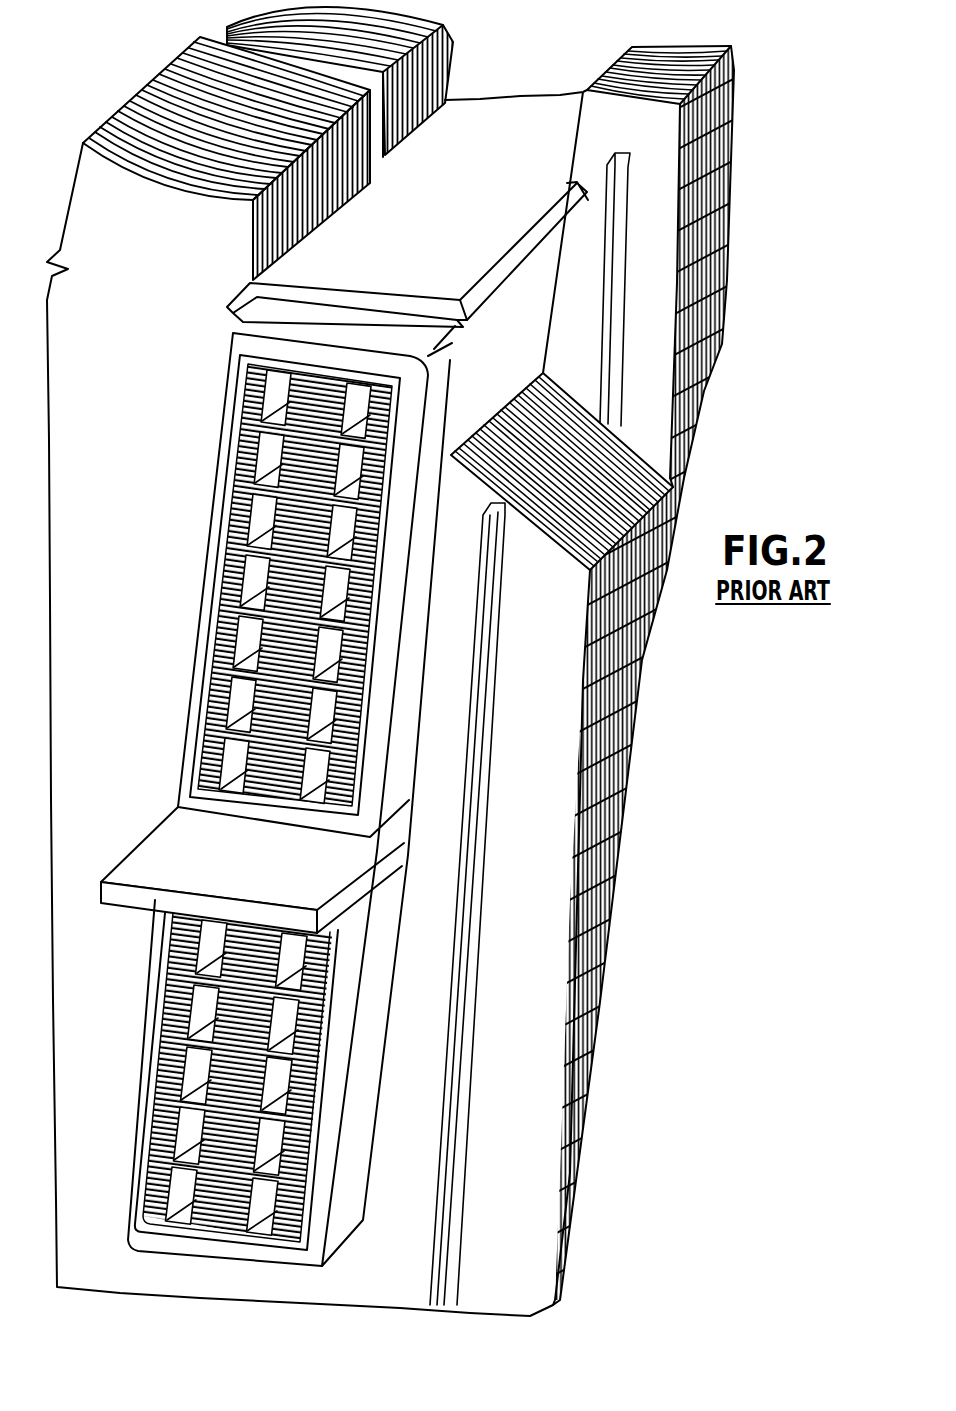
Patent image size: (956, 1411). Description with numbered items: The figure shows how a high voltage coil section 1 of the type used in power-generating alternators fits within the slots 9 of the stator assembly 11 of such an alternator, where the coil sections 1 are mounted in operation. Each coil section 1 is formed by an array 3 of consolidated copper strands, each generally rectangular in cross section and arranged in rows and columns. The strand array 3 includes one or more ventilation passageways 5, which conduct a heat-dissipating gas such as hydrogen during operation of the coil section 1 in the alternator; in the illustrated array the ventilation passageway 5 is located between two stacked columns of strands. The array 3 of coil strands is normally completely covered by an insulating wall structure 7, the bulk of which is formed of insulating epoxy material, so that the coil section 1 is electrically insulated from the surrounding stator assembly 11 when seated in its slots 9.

The high voltage coil section 1 is at (241, 411).
The array 3 is at (228, 500).
The ventilation passageway 5 is at (248, 623).
The insulating wall structure 7 is at (237, 343).
The slots 9 is at (205, 1243).
The stator assembly 11 is at (518, 96).